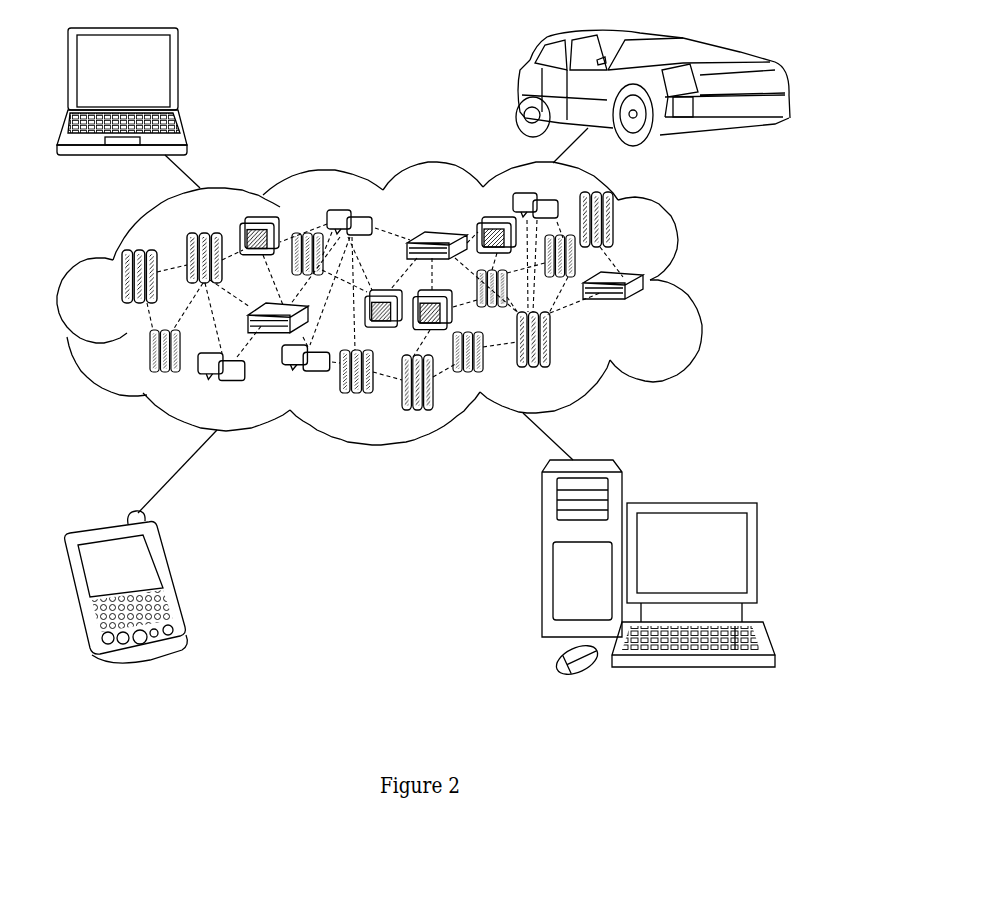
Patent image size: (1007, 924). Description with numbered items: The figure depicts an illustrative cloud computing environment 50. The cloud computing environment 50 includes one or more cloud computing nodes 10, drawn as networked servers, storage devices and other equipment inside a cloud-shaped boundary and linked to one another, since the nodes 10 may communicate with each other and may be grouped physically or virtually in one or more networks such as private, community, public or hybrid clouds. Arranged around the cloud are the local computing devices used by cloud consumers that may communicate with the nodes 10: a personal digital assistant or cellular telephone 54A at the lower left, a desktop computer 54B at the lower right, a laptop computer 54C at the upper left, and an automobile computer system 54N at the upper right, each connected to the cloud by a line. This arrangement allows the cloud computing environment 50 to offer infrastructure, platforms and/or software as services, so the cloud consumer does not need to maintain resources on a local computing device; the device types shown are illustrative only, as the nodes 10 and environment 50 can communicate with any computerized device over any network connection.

The cloud computing node 10 is at (645, 306).
The cloud computing environment 50 is at (690, 283).
The personal digital assistant (PDA) or cellular telephone 54A is at (167, 575).
The desktop computer 54B is at (688, 502).
The laptop computer 54C is at (177, 75).
The automobile computer system 54N is at (517, 88).